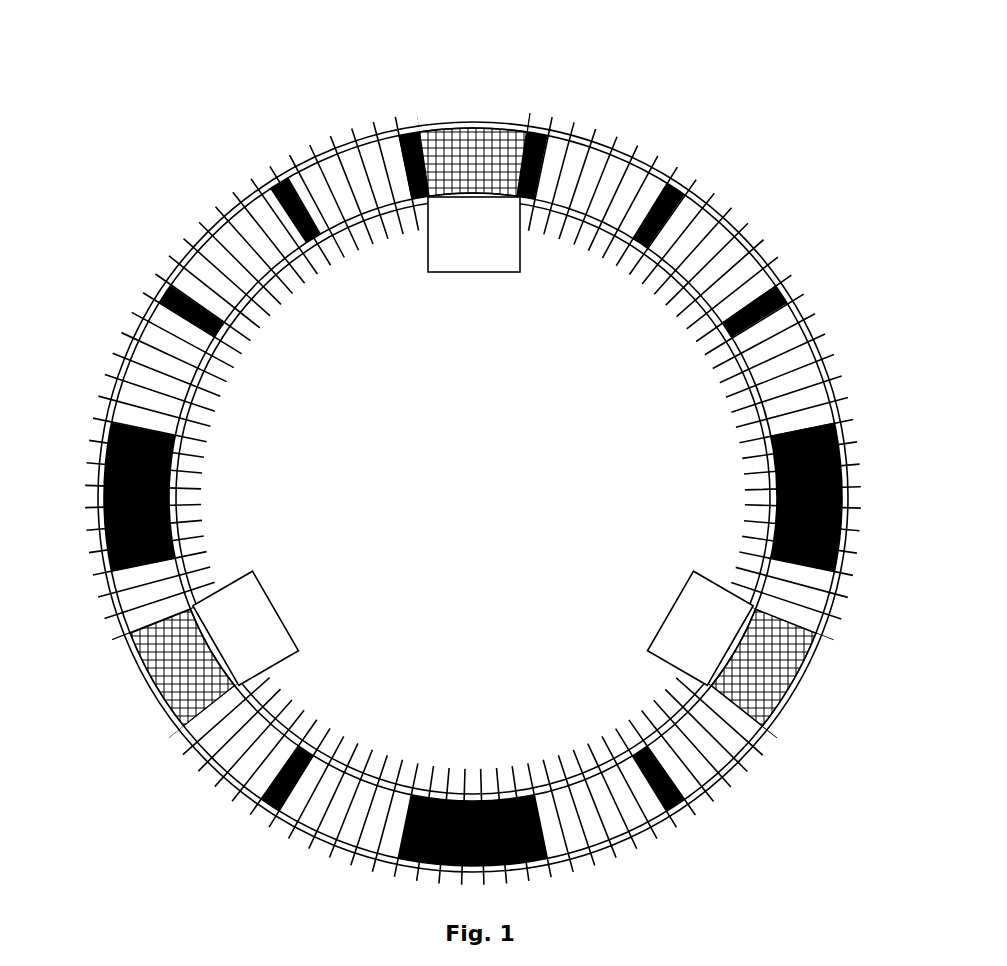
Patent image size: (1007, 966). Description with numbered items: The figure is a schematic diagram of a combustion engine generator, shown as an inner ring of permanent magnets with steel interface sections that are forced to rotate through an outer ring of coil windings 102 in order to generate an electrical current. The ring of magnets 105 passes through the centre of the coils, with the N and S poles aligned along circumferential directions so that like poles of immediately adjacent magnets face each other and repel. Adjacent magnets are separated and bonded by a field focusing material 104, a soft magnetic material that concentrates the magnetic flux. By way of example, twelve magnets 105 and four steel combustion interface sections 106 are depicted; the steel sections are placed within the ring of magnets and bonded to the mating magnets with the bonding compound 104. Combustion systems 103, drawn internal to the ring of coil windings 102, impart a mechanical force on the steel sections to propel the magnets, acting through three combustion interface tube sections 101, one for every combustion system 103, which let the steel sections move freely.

The combustion interface tube section 101 is at (485, 112).
The coil windings 102 is at (572, 118).
The combustion system 103 is at (452, 247).
The field focusing material 104 is at (480, 444).
The magnets 105 is at (715, 245).
The steel combustion interface section 106 is at (847, 478).